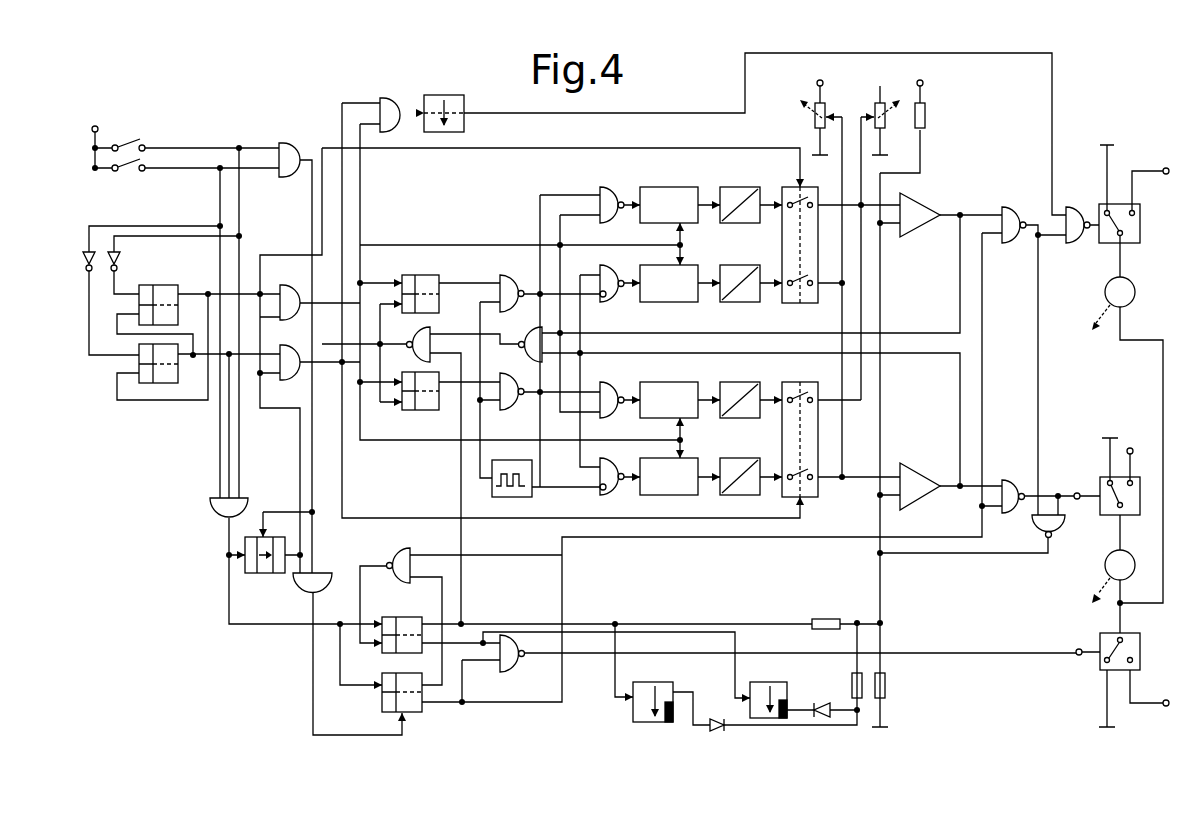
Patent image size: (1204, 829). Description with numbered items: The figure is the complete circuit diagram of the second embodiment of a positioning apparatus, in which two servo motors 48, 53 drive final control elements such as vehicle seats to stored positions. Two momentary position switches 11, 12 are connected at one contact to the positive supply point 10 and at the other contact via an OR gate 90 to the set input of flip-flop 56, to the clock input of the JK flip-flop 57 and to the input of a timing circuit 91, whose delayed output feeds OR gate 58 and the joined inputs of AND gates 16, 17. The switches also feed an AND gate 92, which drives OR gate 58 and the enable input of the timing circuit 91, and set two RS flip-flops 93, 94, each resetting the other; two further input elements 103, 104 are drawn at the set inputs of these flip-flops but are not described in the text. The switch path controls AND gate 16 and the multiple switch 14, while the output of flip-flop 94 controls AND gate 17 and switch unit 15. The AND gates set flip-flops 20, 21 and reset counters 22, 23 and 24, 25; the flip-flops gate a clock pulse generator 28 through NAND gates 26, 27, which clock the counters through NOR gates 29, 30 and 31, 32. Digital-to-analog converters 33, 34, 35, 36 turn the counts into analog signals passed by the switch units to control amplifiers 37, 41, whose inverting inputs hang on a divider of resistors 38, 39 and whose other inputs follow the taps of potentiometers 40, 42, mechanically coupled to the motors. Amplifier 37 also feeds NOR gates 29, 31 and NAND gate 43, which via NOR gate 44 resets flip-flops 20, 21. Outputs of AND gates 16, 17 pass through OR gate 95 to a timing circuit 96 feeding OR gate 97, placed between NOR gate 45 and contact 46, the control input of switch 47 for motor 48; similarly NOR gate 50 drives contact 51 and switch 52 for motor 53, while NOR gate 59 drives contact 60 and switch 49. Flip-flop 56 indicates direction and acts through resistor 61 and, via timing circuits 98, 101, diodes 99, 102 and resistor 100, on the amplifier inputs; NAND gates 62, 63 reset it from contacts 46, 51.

The power supply contact 10 is at (95, 126).
The position switch 11 is at (135, 140).
The position switch 12 is at (130, 173).
The multiple switch 14 is at (800, 303).
The multiple switch 15 is at (798, 384).
The AND gate 16 is at (290, 286).
The AND gate 17 is at (290, 380).
The flip-flop 20 is at (426, 284).
The flip-flop 21 is at (428, 402).
The counter 22 is at (664, 190).
The counter 23 is at (668, 300).
The counter 24 is at (668, 388).
The counter 25 is at (694, 465).
The NAND gate 26 is at (506, 280).
The NAND gate 27 is at (508, 406).
The clock pulse generator 28 is at (526, 495).
The NOR gate 29 is at (606, 187).
The NOR gate 30 is at (608, 302).
The NOR gate 31 is at (606, 384).
The NOR gate 32 is at (612, 494).
The digital-to-analog converter 33 is at (740, 190).
The digital-to-analog converter 34 is at (740, 302).
The digital-to-analog converter 35 is at (740, 388).
The digital-to-analog converter 36 is at (740, 462).
The control amplifier 37 is at (924, 208).
The resistor 38 is at (926, 116).
The resistor 39 is at (886, 684).
The potentiometer 40 is at (884, 126).
The operational amplifier 41 is at (924, 478).
The potentiometer 42 is at (813, 118).
The NAND gate 43 is at (528, 336).
The NOR gate 44 is at (430, 330).
The NOR gate 45 is at (1010, 210).
The contact 46 is at (1088, 230).
The switch 47 is at (1140, 222).
The setting motor 48 is at (1134, 288).
The switch 49 is at (1140, 652).
The NOR gate 50 is at (1004, 482).
The contact 51 is at (1078, 492).
The switch 52 is at (1106, 515).
The servo motor 53 is at (1105, 568).
The flip-flop 56 is at (406, 622).
The JK flip-flop 57 is at (410, 714).
The OR gate 58 is at (326, 578).
The NOR gate 59 is at (520, 668).
The contact 60 is at (1078, 649).
The resistor 61 is at (824, 620).
The NAND gate 62 is at (402, 552).
The NAND gate 63 is at (1036, 530).
The OR gate 90 is at (212, 505).
The timing circuit 91 is at (262, 568).
The AND gate 92 is at (288, 143).
The RS flip-flop 93 is at (162, 290).
The RS flip-flop 94 is at (170, 374).
The OR gate 95 is at (380, 98).
The timing circuit 96 is at (440, 95).
The OR gate 97 is at (1068, 208).
The timing circuit 98 is at (646, 686).
The diode 99 is at (714, 722).
The resistor 100 is at (854, 680).
The timing circuit 101 is at (768, 686).
The diode 102 is at (824, 705).
The sensor 103 is at (119, 258).
The sensor 104 is at (84, 256).